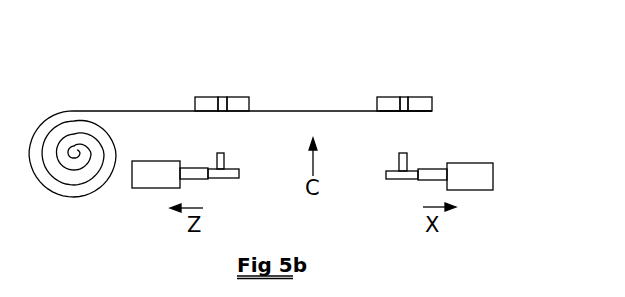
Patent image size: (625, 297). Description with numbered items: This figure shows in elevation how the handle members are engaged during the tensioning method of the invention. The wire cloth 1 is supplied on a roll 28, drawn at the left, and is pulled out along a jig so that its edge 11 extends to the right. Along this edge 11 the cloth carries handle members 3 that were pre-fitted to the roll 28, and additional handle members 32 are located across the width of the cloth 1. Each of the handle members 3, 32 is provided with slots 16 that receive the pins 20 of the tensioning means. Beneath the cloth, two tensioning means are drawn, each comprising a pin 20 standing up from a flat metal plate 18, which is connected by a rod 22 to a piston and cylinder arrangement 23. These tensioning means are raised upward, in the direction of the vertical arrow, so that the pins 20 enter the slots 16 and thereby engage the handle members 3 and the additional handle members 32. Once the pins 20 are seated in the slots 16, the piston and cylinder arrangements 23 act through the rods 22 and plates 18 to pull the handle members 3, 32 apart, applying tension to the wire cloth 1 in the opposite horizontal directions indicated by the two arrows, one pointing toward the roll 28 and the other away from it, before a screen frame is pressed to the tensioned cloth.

The wire cloth 1 is at (316, 111).
The handle members 3 is at (430, 103).
The edge 11 is at (432, 112).
The slots 16 is at (222, 103).
The flat metal plates 18 is at (396, 181).
The pins 20 is at (225, 156).
The rods 22 is at (193, 166).
The piston and cylinder arrangements 23 is at (472, 185).
The roll 28 is at (42, 186).
The additional handle members 32 is at (209, 104).